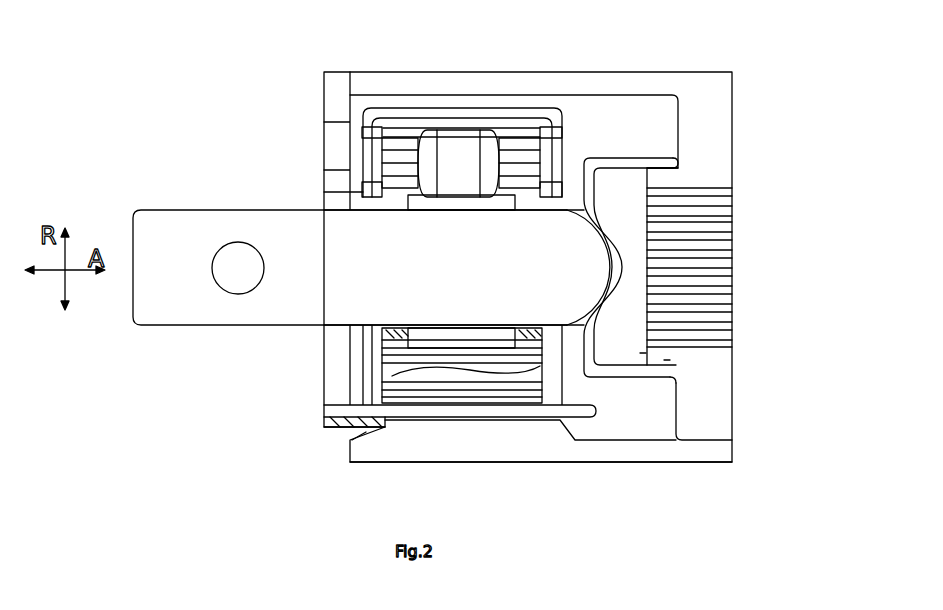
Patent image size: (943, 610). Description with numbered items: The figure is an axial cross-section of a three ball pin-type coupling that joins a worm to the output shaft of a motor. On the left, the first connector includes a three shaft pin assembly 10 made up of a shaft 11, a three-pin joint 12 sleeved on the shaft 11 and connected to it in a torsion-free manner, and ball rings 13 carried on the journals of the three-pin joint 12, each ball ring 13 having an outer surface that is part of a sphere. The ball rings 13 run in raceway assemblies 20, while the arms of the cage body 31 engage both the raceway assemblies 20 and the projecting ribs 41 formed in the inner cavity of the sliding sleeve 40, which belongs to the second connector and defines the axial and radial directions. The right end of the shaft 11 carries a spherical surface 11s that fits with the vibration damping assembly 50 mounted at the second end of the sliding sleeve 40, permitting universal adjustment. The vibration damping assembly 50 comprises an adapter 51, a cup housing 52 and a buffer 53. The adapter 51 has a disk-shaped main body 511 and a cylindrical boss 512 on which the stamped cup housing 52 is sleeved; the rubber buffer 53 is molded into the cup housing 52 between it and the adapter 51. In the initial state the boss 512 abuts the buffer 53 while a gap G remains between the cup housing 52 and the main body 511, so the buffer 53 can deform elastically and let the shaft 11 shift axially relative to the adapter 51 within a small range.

The three shaft pin assembly 10 is at (170, 208).
The shaft 11 is at (209, 222).
The spherical surface 11s is at (606, 278).
The three-pin joint 12 is at (372, 166).
The ball rings 13 is at (372, 142).
The raceway assemblies 20 is at (404, 130).
The cage body 31 is at (348, 410).
The sliding sleeve 40 is at (493, 82).
The projecting ribs 41 is at (452, 440).
The vibration damping assembly 50 is at (735, 263).
The adapter 51 is at (720, 176).
The cup housing 52 is at (610, 370).
The buffer 53 is at (640, 355).
The main body 511 is at (713, 402).
The boss 512 is at (672, 363).
The gap G is at (668, 362).